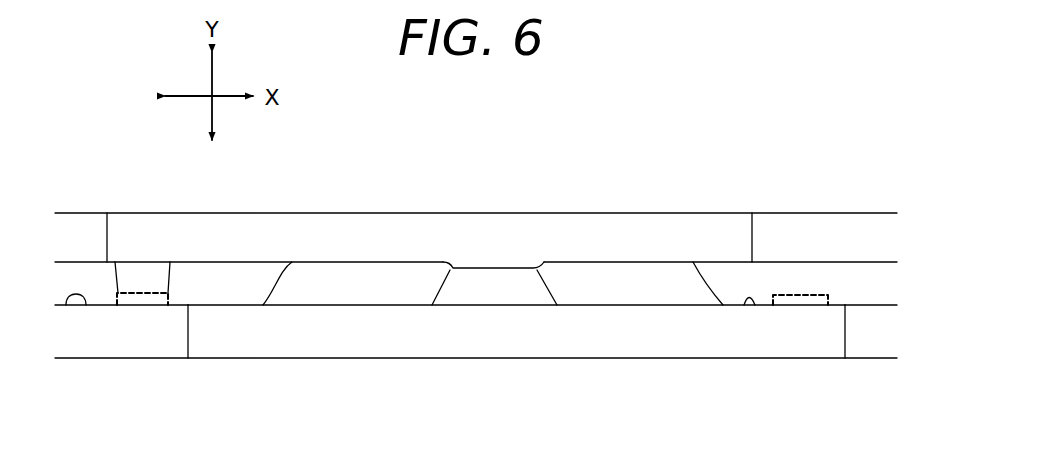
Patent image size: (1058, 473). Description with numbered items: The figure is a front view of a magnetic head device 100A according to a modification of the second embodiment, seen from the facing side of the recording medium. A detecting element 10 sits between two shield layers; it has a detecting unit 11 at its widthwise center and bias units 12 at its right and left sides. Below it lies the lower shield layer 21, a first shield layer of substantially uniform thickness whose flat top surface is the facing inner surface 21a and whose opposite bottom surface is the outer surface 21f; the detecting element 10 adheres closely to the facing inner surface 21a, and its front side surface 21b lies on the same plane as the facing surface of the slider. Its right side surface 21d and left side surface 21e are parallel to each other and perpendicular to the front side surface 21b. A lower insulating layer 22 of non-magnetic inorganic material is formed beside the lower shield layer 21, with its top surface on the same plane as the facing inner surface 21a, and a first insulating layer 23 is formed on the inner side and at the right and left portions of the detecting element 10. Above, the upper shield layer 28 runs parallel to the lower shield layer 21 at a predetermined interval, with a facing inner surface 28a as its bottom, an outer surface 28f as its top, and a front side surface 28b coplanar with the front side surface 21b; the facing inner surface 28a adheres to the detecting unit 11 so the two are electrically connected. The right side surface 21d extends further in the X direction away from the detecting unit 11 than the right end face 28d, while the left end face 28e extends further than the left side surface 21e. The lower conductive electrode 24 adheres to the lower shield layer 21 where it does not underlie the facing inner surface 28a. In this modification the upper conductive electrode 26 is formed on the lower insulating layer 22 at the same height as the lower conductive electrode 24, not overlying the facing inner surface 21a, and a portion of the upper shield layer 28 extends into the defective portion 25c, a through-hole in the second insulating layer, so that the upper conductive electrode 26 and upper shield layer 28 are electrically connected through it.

The detecting element 10 is at (496, 318).
The detecting unit 11 is at (517, 288).
The bias unit 12 is at (312, 287).
The lower shield layer 21 is at (426, 338).
The facing inner surface 21a is at (754, 305).
The front side surface 21b is at (357, 335).
The right side surface 21d is at (845, 345).
The left side surface 21e is at (188, 340).
The outer surface 21f is at (670, 358).
The lower insulating layer 22 is at (105, 333).
The first insulating layer 23 is at (65, 305).
The lower conductive electrode 24 is at (802, 305).
The defective portion 25c is at (168, 292).
The upper conductive electrode 26 is at (147, 305).
The upper shield layer 28 is at (486, 240).
The facing inner surface 28a is at (724, 264).
The front side surface 28b is at (390, 232).
The right end face 28d is at (752, 240).
The left end face 28e is at (107, 245).
The outer surface 28f is at (577, 213).
The magnetic head device 100A is at (634, 184).